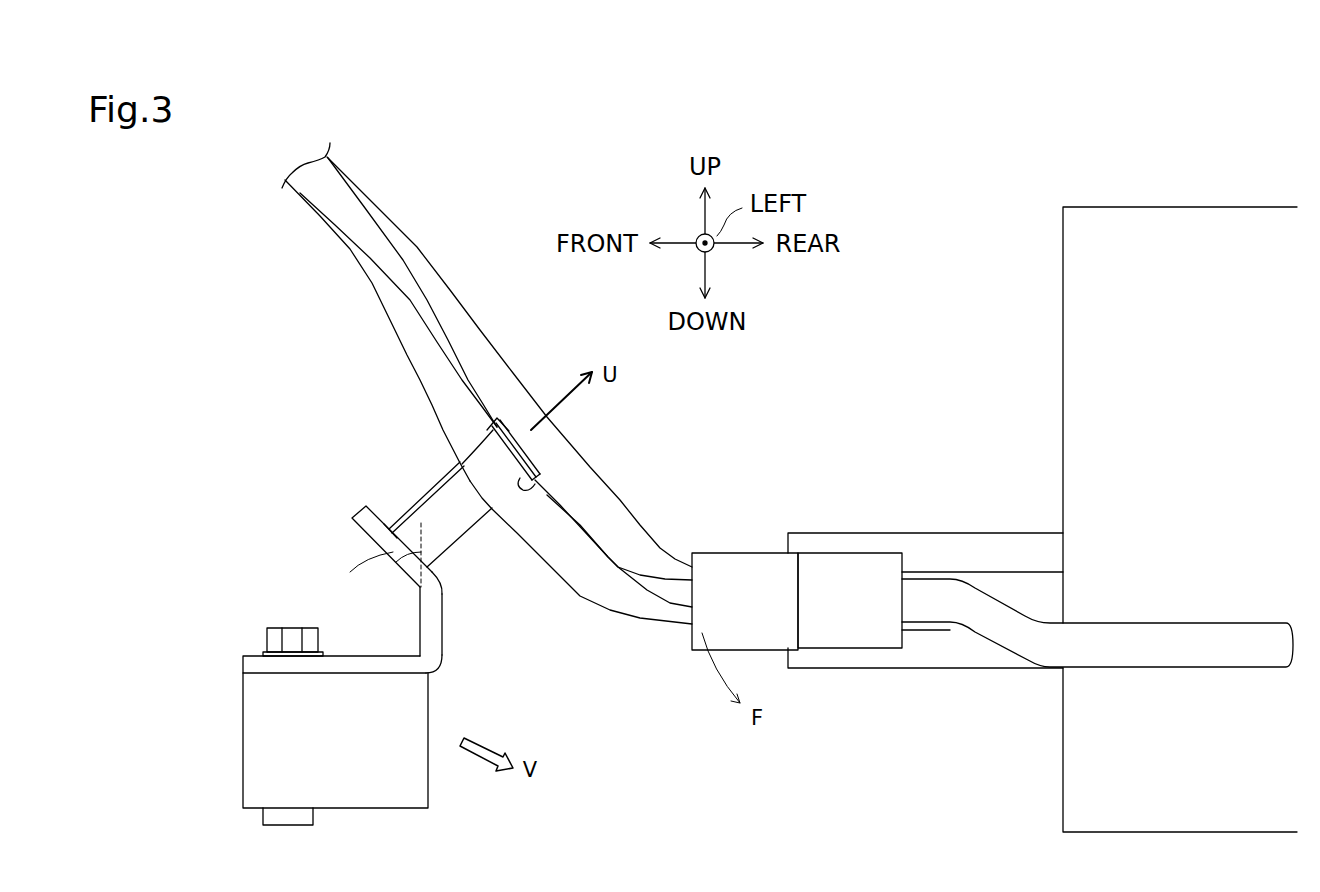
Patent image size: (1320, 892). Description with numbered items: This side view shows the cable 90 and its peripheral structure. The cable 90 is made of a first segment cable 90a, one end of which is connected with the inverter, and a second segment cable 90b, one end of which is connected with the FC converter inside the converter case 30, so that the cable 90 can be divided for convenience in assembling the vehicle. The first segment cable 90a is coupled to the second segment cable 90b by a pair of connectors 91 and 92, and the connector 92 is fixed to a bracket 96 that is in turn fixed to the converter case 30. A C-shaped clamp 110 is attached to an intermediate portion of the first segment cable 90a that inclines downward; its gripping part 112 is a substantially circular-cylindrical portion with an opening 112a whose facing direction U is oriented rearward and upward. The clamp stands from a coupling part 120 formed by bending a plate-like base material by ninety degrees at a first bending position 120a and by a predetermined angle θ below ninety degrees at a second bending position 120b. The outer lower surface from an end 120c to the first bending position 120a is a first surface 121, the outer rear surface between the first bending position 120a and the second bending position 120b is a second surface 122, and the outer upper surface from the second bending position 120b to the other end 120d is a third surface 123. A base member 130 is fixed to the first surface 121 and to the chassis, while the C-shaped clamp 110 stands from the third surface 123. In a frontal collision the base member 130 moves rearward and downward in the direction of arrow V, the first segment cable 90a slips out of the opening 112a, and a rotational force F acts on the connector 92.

The converter case 30 is at (1060, 305).
The cable 90 is at (631, 555).
The first segment cable 90a is at (610, 612).
The second segment cable 90b is at (983, 643).
The connector 91 is at (742, 553).
The connector 92 is at (855, 553).
The bracket 96 is at (950, 533).
The C-shaped clamp 110 is at (433, 480).
The gripping part 112 is at (505, 490).
The opening 112a is at (495, 425).
The coupling part 120 is at (339, 598).
The first bending position 120a is at (437, 670).
The second bending position 120b is at (441, 580).
The end 120c is at (242, 665).
The other end 120d is at (353, 507).
The first surface 121 is at (297, 673).
The second surface 122 is at (446, 620).
The third surface 123 is at (384, 520).
The base member 130 is at (242, 752).